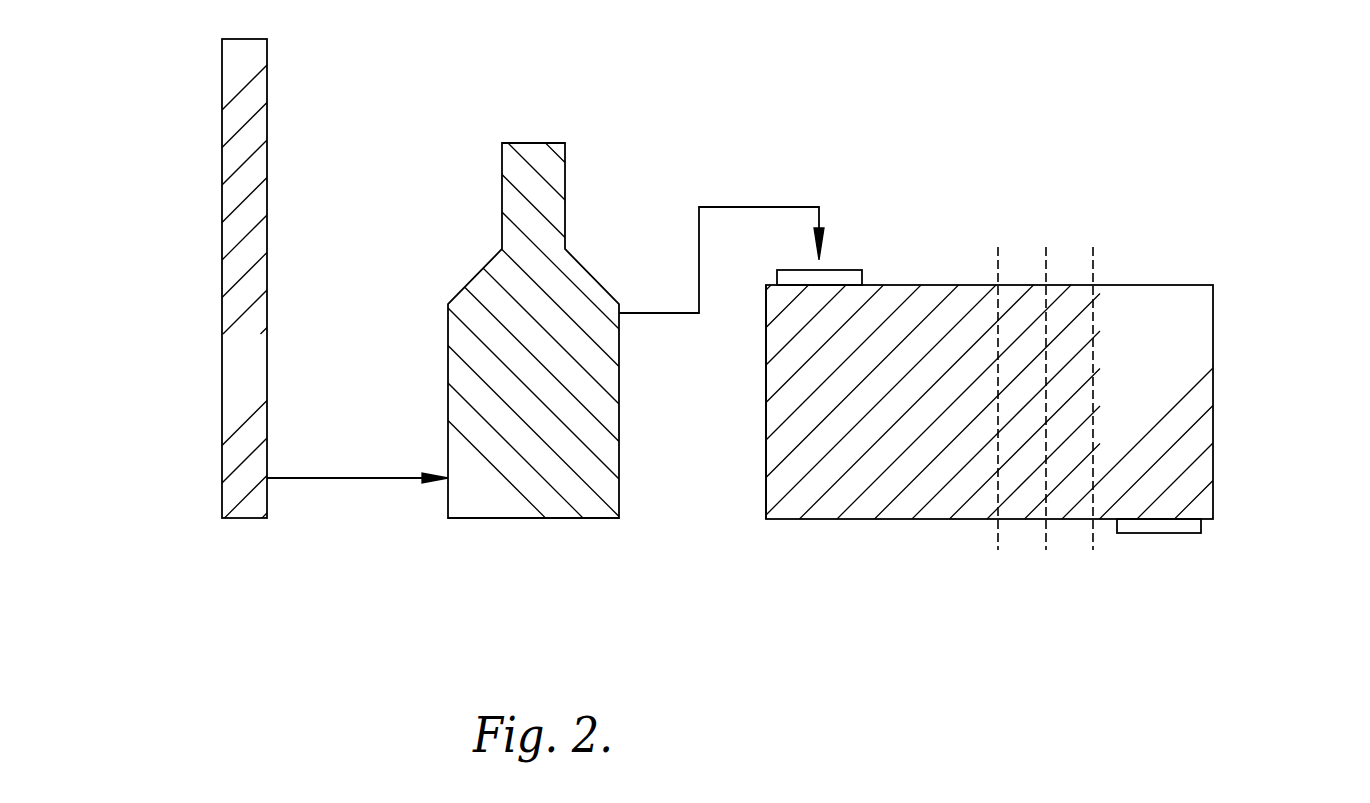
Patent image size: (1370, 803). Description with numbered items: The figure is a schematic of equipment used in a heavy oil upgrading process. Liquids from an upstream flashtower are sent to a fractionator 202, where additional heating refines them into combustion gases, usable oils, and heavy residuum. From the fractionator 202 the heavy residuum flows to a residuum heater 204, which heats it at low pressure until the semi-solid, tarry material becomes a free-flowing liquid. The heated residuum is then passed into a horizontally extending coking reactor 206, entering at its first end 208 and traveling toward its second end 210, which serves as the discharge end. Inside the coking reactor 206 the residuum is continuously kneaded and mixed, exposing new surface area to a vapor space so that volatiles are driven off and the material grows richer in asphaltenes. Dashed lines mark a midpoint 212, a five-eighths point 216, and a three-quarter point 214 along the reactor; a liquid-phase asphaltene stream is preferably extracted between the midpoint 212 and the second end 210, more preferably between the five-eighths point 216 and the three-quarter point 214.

The fractionator 202 is at (238, 110).
The residuum heater 204 is at (476, 278).
The coking reactor 206 is at (893, 284).
The first end 208 is at (766, 328).
The second end 210 is at (1213, 385).
The midpoint 212 is at (997, 533).
The three-quarter point 214 is at (1093, 545).
The five-eighths point 216 is at (1046, 543).